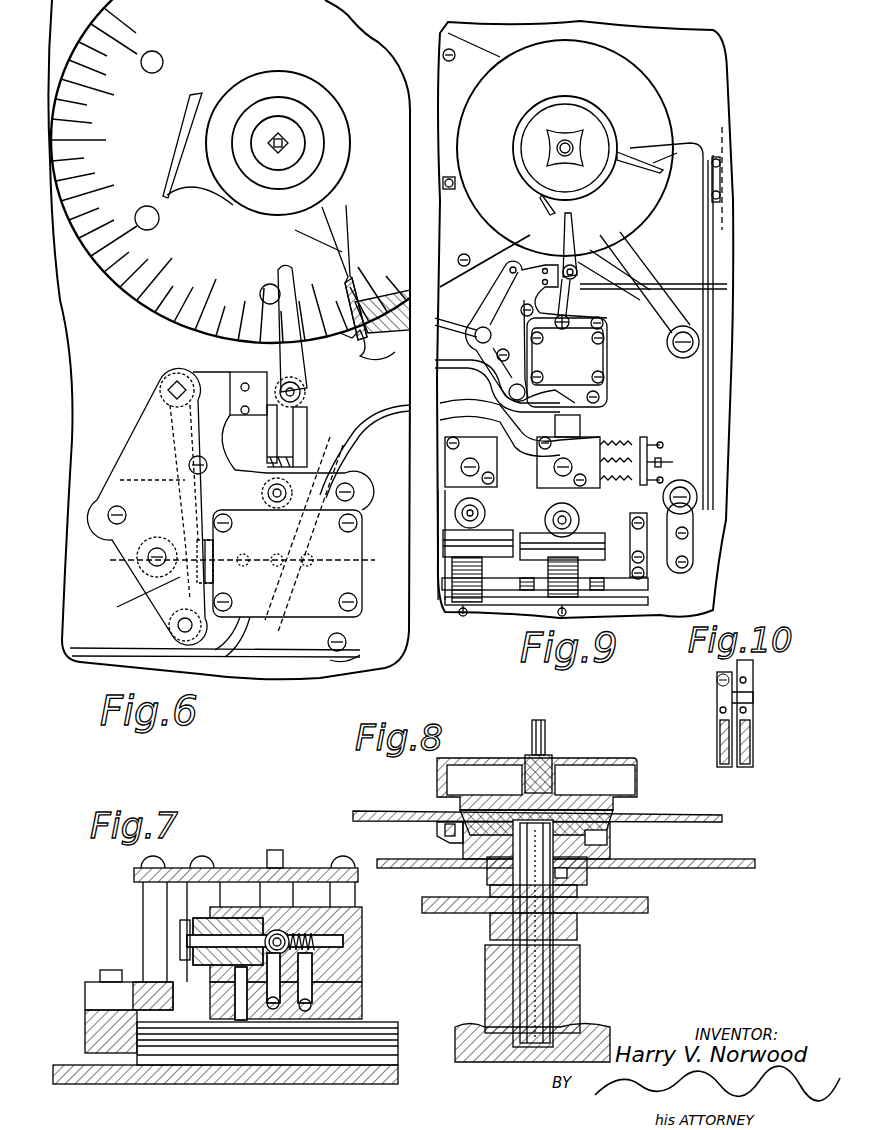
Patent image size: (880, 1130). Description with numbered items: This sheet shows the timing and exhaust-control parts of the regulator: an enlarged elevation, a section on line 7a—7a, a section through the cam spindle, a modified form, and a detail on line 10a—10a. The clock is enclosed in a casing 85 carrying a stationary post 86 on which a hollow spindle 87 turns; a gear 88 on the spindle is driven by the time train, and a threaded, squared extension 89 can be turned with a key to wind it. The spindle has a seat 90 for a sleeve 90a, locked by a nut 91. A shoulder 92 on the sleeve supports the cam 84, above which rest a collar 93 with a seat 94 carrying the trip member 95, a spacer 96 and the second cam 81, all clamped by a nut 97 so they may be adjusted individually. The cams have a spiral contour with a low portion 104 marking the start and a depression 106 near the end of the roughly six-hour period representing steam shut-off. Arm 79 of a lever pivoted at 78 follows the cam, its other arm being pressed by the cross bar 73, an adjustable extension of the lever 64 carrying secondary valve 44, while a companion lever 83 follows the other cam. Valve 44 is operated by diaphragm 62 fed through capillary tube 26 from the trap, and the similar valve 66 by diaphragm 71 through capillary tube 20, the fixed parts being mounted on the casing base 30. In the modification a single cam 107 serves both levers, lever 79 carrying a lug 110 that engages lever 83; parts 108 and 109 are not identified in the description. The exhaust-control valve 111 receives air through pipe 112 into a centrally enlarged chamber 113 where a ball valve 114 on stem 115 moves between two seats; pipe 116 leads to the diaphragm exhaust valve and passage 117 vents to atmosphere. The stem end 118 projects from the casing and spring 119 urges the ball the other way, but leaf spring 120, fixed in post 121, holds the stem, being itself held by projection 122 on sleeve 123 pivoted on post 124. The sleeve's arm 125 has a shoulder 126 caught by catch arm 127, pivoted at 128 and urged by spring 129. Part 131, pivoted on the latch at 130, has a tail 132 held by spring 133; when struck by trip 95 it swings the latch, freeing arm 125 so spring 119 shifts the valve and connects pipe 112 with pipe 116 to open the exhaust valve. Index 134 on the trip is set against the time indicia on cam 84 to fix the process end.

In FIG. 6, the section line 7a— 7a is at (98, 575).
In FIG. 9, the section line 10a— 10a is at (725, 125).
In FIG. 9, the capillary tube 20 is at (455, 612).
In FIG. 9, the capillary tube 26 is at (570, 614).
In FIG. 6, the casing base 30 is at (70, 612).
In FIG. 7, the casing base 30 is at (140, 1080).
In FIG. 9, the secondary valve 44 is at (568, 462).
In FIG. 9, the capsular diaphragm 62 is at (545, 559).
In FIG. 9, the lever 64 is at (520, 427).
In FIG. 9, the secondary valve 66 is at (471, 462).
In FIG. 9, the capsular diaphragm 71 is at (493, 533).
In FIG. 9, the cross bar 73 is at (645, 438).
In FIG. 9, the pivot 78 is at (700, 505).
In FIG. 9, the lever arm 79 is at (712, 402).
In FIG. 10, the lever arm 79 is at (720, 738).
In FIG. 8, the cam or templet 81 is at (554, 811).
In FIG. 10, the lever 83 is at (752, 735).
In FIG. 8, the templet or cam 84 is at (579, 859).
In FIG. 8, the clock casing 85 is at (580, 1000).
In FIG. 8, the stationary post 86 is at (545, 970).
In FIG. 8, the sleeve-like spindle 87 is at (580, 890).
In FIG. 8, the gear 88 is at (630, 913).
In FIG. 6, the threaded and squared extension 89 is at (284, 140).
In FIG. 8, the threaded and squared extension 89 is at (545, 728).
In FIG. 8, the seat 90 is at (500, 795).
In FIG. 6, the sleeve 90a is at (310, 143).
In FIG. 8, the sleeve 90a is at (560, 790).
In FIG. 9, the nut 91 is at (565, 135).
In FIG. 8, the nut 91 is at (520, 760).
In FIG. 8, the shoulder 92 is at (590, 872).
In FIG. 6, the collar 93 is at (320, 156).
In FIG. 8, the collar 93 is at (605, 835).
In FIG. 6, the seat 94 is at (338, 172).
In FIG. 8, the seat 94 is at (607, 845).
In FIG. 6, the trip member 95 is at (195, 175).
In FIG. 9, the trip member 95 is at (548, 205).
In FIG. 8, the trip member 95 is at (438, 830).
In FIG. 8, the spacer 96 is at (620, 815).
In FIG. 9, the nut 97 is at (600, 135).
In FIG. 8, the nut 97 is at (610, 765).
In FIG. 6, the low portion of cam 104 is at (320, 328).
In FIG. 6, the depression 106 is at (370, 353).
In FIG. 9, the single cam 107 is at (643, 72).
In FIG. 9, the hook 108 is at (675, 175).
In FIG. 9, the frame bar 109 is at (645, 200).
In FIG. 9, the lug 110 is at (722, 178).
In FIG. 10, the lug 110 is at (745, 695).
In FIG. 6, the secondary valve 111 is at (350, 540).
In FIG. 9, the secondary valve 111 is at (595, 365).
In FIG. 7, the secondary valve 111 is at (362, 972).
In FIG. 6, the air pipe 112 is at (215, 665).
In FIG. 7, the air pipe 112 is at (307, 1012).
In FIG. 7, the valve chamber 113 is at (265, 935).
In FIG. 7, the ball valve 114 is at (280, 930).
In FIG. 7, the valve stem 115 is at (345, 941).
In FIG. 6, the pipe 116 is at (380, 425).
In FIG. 7, the pipe 116 is at (273, 1010).
In FIG. 6, the passage 117 is at (243, 568).
In FIG. 7, the passage 117 is at (240, 1020).
In FIG. 6, the valve stem end 118 is at (146, 601).
In FIG. 7, the valve stem end 118 is at (182, 950).
In FIG. 7, the spring 119 is at (328, 910).
In FIG. 6, the leaf spring 120 is at (151, 502).
In FIG. 7, the leaf spring 120 is at (180, 927).
In FIG. 6, the stationary post 121 is at (178, 628).
In FIG. 6, the projection 122 is at (145, 420).
In FIG. 6, the sleeve 123 is at (155, 392).
In FIG. 6, the stationary post 124 is at (170, 388).
In FIG. 6, the arm 125 is at (205, 378).
In FIG. 6, the shoulder 126 is at (228, 390).
In FIG. 6, the catch arm 127 is at (265, 425).
In FIG. 6, the pivot 128 is at (262, 490).
In FIG. 9, the pivot 128 is at (562, 328).
In FIG. 6, the spring 129 is at (304, 524).
In FIG. 6, the pivot 130 is at (303, 385).
In FIG. 9, the pivot 130 is at (575, 262).
In FIG. 6, the trip-engaging part 131 is at (280, 270).
In FIG. 9, the trip-engaging part 131 is at (586, 239).
In FIG. 6, the tail 132 is at (266, 458).
In FIG. 6, the spring 133 is at (306, 410).
In FIG. 6, the index 134 is at (335, 248).
In FIG. 9, the index 134 is at (637, 158).
In FIG. 8, the index 134 is at (638, 835).